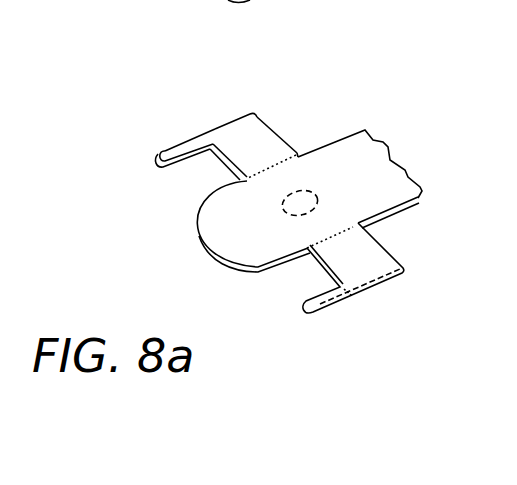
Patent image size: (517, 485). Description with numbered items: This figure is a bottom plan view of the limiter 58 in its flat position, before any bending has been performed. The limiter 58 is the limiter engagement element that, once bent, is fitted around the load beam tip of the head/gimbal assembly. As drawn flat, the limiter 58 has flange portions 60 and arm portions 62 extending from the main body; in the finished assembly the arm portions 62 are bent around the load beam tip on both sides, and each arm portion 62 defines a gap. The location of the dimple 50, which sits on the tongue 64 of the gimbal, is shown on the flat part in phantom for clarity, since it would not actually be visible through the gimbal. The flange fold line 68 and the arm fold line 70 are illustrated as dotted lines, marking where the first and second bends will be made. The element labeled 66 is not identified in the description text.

The dimple 50 is at (282, 205).
The limiter 58 is at (378, 298).
The flange portions 60 is at (272, 142).
The arm portions 62 is at (178, 150).
The tongue 64 is at (425, 157).
The contact arm 66 is at (237, 149).
The flange fold line 68 is at (295, 155).
The arm fold line 70 is at (223, 146).